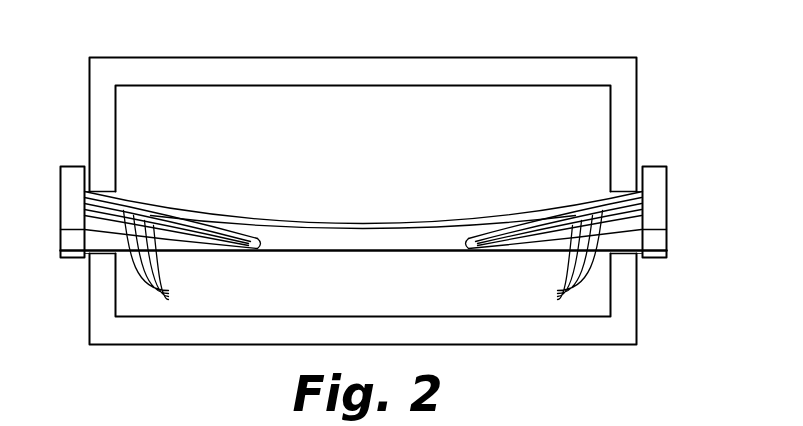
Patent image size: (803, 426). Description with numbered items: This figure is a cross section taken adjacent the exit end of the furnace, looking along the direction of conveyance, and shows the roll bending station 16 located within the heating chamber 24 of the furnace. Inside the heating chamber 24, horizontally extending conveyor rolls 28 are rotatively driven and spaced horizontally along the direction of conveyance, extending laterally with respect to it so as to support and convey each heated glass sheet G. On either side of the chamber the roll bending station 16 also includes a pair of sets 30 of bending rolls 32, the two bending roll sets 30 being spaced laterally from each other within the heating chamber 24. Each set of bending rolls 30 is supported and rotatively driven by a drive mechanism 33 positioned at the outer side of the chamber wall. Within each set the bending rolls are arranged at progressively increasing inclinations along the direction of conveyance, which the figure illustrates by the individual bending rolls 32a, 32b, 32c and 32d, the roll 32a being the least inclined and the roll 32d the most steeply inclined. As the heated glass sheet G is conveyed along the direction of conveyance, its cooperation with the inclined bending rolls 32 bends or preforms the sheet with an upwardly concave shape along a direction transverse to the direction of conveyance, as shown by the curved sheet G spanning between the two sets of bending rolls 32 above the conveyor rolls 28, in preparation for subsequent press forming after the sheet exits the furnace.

The roll bending station 16 is at (458, 52).
The heating chamber 24 is at (211, 87).
The conveyor rolls 28 is at (357, 252).
The sets of bending rolls 30 is at (128, 188).
The bending rolls 32 is at (363, 261).
The bending roll at first inclination 32a is at (163, 233).
The bending roll at second inclination 32b is at (155, 224).
The bending roll at third inclination 32c is at (147, 218).
The bending roll at fourth inclination 32d is at (140, 210).
The drive mechanism 33 is at (68, 191).
The heated glass sheet G is at (333, 223).